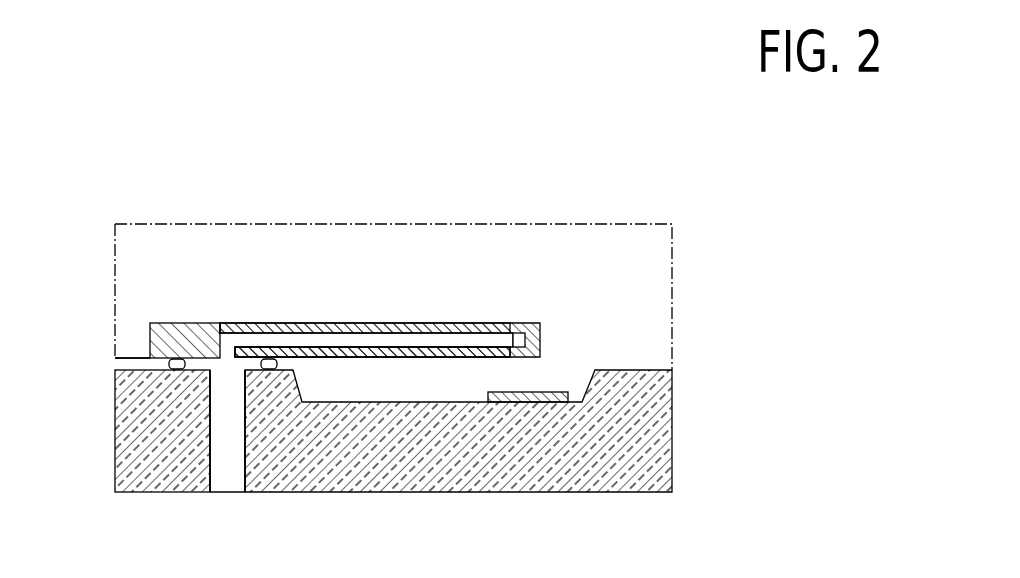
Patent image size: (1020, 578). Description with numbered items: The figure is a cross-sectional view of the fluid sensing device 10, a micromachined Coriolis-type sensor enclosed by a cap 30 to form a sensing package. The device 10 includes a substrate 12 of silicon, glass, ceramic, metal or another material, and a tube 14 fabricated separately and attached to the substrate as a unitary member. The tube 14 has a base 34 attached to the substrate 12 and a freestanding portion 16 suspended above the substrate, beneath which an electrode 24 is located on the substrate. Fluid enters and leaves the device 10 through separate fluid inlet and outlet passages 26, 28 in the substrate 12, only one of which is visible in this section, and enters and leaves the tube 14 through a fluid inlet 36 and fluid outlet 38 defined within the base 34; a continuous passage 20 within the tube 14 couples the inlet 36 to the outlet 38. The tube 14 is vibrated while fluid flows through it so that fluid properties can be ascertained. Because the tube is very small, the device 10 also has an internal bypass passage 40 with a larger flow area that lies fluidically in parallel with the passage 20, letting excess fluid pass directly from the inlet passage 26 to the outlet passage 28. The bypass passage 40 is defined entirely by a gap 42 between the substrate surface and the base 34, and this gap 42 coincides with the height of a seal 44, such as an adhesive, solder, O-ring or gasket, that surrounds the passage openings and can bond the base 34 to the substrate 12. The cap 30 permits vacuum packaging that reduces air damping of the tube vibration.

The fluid sensing device 10 is at (356, 170).
The substrate 12 is at (657, 432).
The tube 14 is at (494, 294).
The freestanding portion 16 is at (450, 322).
The passage 20 is at (360, 338).
The electrode 24 is at (560, 397).
The fluid inlet passage 26 is at (227, 470).
The fluid outlet passage 28 is at (227, 431).
The cap 30 is at (607, 224).
The base 34 is at (178, 323).
The fluid inlet 36 is at (238, 345).
The fluid outlet 38 is at (372, 352).
The bypass passage 40 is at (220, 368).
The gap 42 is at (113, 365).
The seal 44 is at (177, 370).